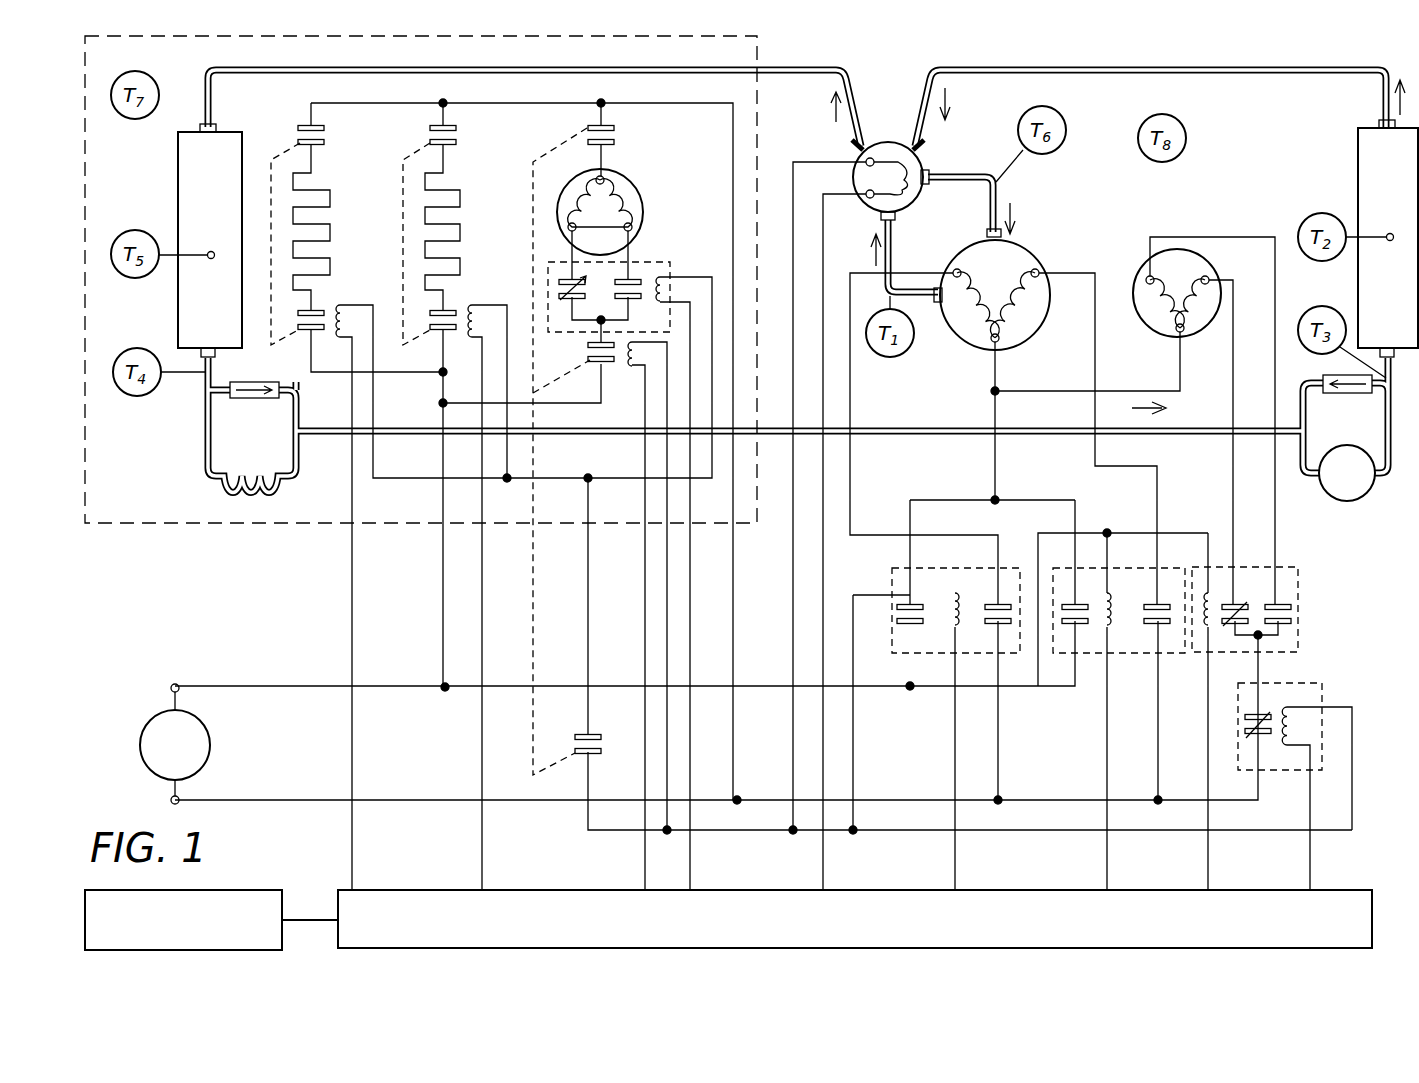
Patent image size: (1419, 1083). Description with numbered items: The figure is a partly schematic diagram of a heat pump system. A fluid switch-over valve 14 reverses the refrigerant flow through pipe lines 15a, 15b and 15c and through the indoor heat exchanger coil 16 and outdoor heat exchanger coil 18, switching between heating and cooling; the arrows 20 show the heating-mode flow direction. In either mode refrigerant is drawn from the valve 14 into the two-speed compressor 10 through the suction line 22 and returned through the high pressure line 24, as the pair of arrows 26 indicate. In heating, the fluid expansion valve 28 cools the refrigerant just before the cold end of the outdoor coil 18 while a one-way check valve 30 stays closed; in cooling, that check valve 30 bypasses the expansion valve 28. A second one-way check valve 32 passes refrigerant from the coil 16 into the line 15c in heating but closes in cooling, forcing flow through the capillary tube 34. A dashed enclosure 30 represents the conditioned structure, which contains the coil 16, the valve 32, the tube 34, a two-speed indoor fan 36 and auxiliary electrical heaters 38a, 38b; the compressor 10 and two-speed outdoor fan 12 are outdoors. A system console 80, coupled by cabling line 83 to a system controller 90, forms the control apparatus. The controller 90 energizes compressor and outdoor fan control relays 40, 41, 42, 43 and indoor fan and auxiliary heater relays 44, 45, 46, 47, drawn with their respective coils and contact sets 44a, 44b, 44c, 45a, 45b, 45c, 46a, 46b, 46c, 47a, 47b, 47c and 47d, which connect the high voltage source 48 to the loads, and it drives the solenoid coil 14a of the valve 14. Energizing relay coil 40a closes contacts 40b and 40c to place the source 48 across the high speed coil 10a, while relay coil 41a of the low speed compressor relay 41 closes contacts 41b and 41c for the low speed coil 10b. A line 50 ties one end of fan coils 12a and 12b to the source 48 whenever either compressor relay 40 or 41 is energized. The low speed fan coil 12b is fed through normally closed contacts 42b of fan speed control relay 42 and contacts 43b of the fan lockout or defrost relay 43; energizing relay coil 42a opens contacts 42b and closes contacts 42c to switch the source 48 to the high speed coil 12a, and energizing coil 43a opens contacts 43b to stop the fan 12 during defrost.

The two-speed compressor 10 is at (1004, 284).
The high speed coil 10a is at (970, 282).
The low speed coil 10b is at (1022, 283).
The two-speed fan 12 is at (1159, 283).
The high fan speed coil 12a is at (1158, 292).
The low speed fan coil 12b is at (1193, 292).
The fluid switch-over valve 14 is at (914, 155).
The solenoid coil 14a is at (882, 152).
The pipe line 15a is at (834, 66).
The pipe line 15b is at (1150, 68).
The pipe line 15c is at (895, 428).
The indoor heat exchanger coil 16 is at (178, 182).
The outdoor heat exchanger coil 18 is at (1358, 163).
The arrows 20 is at (830, 103).
The suction line 22 is at (975, 185).
The high pressure line 24 is at (898, 258).
The arrows 26 is at (1014, 200).
The fluid expansion valve 28 is at (1370, 490).
The one-way check valve 30 is at (245, 523).
The second one-way check valve 32 is at (258, 382).
The capillary tube 34 is at (234, 491).
The two-speed fan 36 is at (641, 196).
The auxiliary electrical heater 38a is at (331, 196).
The auxiliary electrical heater 38b is at (461, 196).
The high speed compressor relay 40 is at (937, 591).
The relay coil 40a is at (955, 593).
The normally open relay contacts 40b is at (900, 600).
The normally open relay contacts 40c is at (995, 625).
The low speed compressor relay 41 is at (1128, 618).
The relay coil 41a is at (1103, 630).
The normally open contacts 41b is at (1072, 625).
The normally open contacts 41c is at (1160, 600).
The fan speed control relay 42 is at (1263, 622).
The relay coil 42a is at (1208, 630).
The normally closed contacts 42b is at (1240, 602).
The contacts 42c is at (1298, 560).
The fan lockout or defrost relay 43 is at (1307, 730).
The relay coil 43a is at (1288, 748).
The normally closed contacts 43b is at (1262, 716).
The indoor fan and auxiliary heater relay 44 is at (635, 262).
The inductor 44a is at (668, 282).
The capacitor 44b is at (641, 306).
The variable capacitor 44c is at (584, 303).
The indoor fan and auxiliary heater relay 45 is at (456, 240).
The inductor 45a is at (476, 310).
The capacitor 45b is at (435, 330).
The capacitor 45c is at (457, 133).
The indoor fan and auxiliary heater relay 46 is at (332, 260).
The inductor 46a is at (344, 310).
The capacitor 46b is at (313, 328).
The capacitor 46c is at (325, 133).
The indoor fan and auxiliary heater relay 47 is at (604, 439).
The inductor 47a is at (648, 354).
The capacitor 47b is at (588, 348).
The capacitor 47c is at (615, 130).
The capacitor 47d is at (575, 737).
The source 48 is at (212, 740).
The line 50 is at (1027, 391).
The system console 80 is at (284, 890).
The line 83 is at (302, 918).
The system controller 90 is at (520, 890).